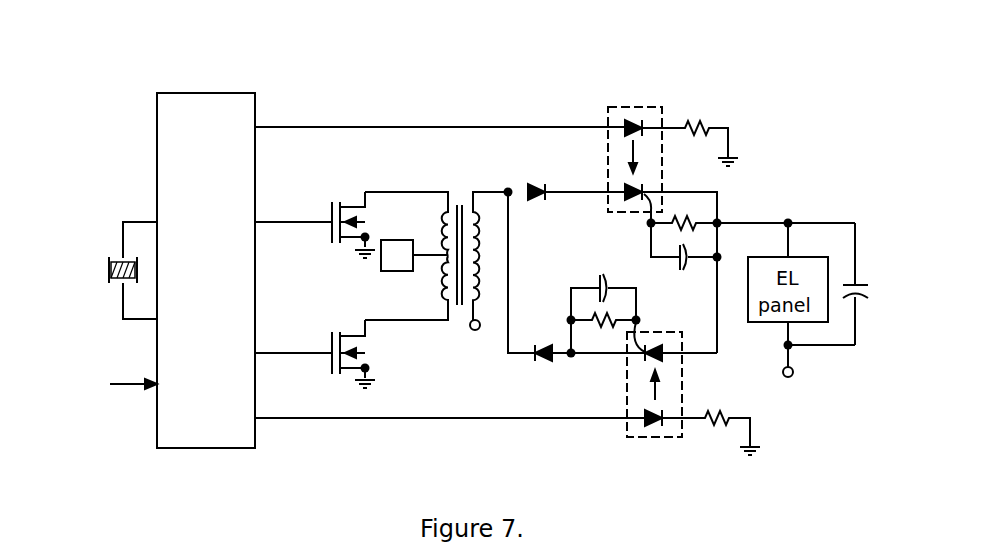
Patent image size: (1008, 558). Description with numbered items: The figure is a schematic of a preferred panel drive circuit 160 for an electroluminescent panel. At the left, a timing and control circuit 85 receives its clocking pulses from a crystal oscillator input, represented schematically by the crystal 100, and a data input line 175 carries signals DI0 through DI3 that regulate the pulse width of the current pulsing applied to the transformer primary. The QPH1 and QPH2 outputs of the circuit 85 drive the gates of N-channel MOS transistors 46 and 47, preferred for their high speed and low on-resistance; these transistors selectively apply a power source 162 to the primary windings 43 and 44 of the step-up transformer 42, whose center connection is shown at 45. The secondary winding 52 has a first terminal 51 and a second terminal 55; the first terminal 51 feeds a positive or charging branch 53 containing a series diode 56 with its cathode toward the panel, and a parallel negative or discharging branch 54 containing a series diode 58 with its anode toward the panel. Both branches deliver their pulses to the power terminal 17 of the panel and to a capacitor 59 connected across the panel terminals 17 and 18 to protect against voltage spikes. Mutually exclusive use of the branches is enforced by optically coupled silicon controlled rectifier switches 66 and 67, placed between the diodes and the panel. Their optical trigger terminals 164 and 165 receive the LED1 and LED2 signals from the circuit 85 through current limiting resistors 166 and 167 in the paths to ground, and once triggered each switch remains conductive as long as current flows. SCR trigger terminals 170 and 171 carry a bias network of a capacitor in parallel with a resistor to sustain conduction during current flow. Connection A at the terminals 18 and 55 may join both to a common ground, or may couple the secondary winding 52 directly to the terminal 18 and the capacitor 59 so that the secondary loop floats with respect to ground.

The timing and control circuit 85 is at (210, 93).
The crystal 100 is at (107, 275).
The data input line 175 is at (125, 387).
The power source 162 is at (380, 260).
The N-channel MOS transistor 46 is at (353, 197).
The N-channel MOS transistor 47 is at (365, 350).
The primary winding 43 is at (447, 227).
The primary winding 44 is at (445, 283).
The primary center tap 45 is at (432, 252).
The transformer 42 is at (458, 267).
The first terminal of secondary winding 51 is at (473, 185).
The secondary winding 52 is at (479, 257).
The second terminal of secondary winding 55 is at (480, 317).
The panel drive circuit 160 is at (483, 77).
The diode 56 is at (538, 180).
The diode 58 is at (543, 362).
The optical trigger terminal 164 is at (646, 134).
The optically coupled silicon controlled rectifier switch 66 is at (660, 107).
The current limiting resistor 166 is at (702, 120).
The charging branch 53 is at (727, 190).
The discharging branch 54 is at (718, 355).
The SCR trigger terminal 170 is at (650, 240).
The SCR trigger terminal 171 is at (637, 305).
The optical trigger terminal 165 is at (664, 413).
The optically coupled silicon controlled rectifier switch 67 is at (683, 377).
The current limiting resistor 167 is at (712, 430).
The power terminal 17 is at (786, 247).
The second terminal 18 is at (785, 333).
The capacitor 59 is at (862, 282).